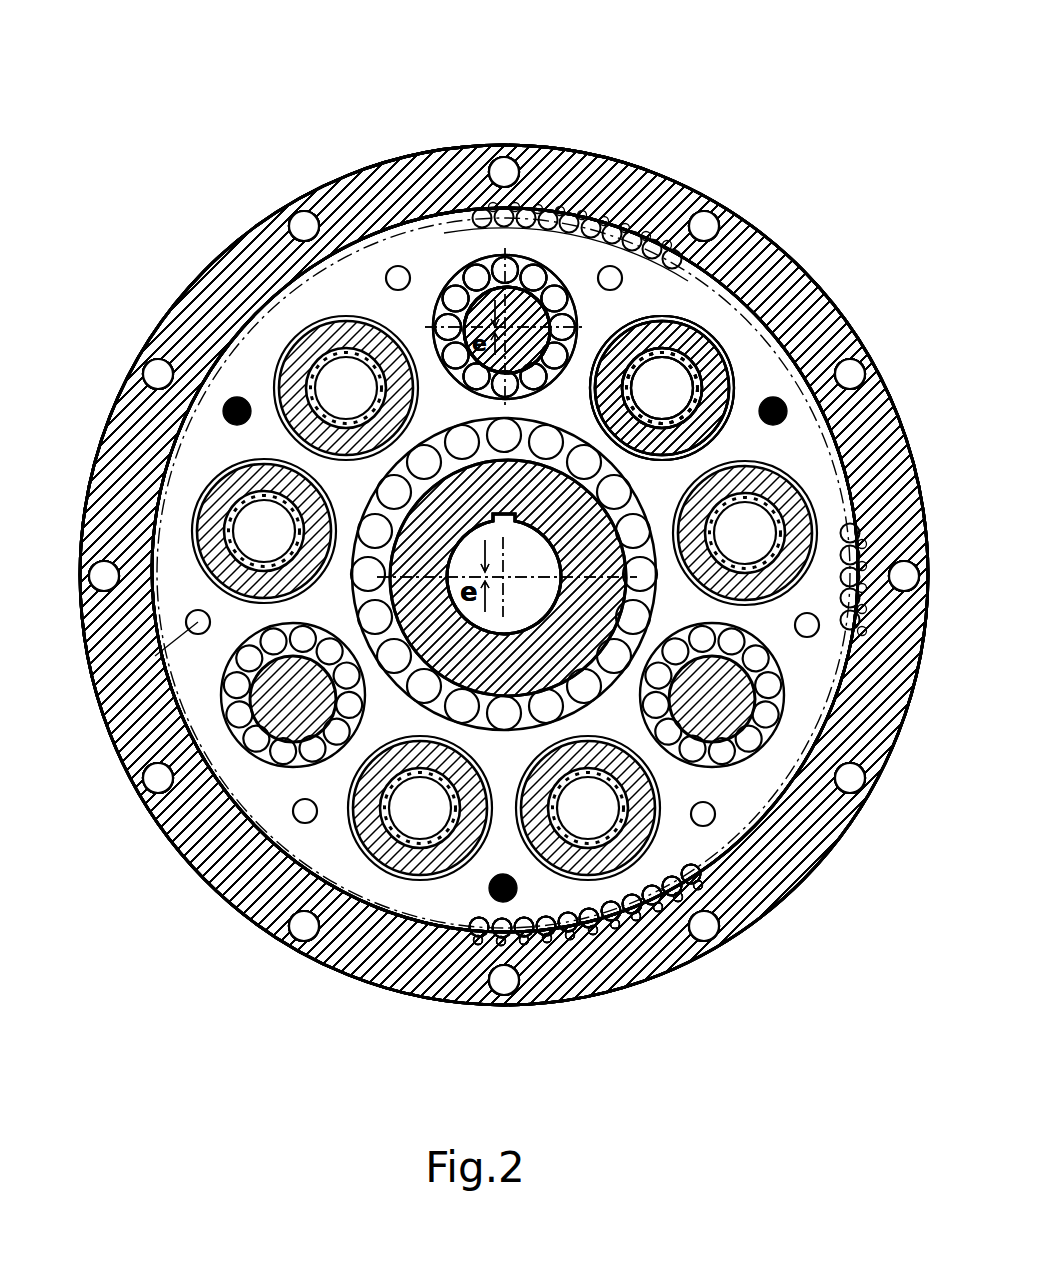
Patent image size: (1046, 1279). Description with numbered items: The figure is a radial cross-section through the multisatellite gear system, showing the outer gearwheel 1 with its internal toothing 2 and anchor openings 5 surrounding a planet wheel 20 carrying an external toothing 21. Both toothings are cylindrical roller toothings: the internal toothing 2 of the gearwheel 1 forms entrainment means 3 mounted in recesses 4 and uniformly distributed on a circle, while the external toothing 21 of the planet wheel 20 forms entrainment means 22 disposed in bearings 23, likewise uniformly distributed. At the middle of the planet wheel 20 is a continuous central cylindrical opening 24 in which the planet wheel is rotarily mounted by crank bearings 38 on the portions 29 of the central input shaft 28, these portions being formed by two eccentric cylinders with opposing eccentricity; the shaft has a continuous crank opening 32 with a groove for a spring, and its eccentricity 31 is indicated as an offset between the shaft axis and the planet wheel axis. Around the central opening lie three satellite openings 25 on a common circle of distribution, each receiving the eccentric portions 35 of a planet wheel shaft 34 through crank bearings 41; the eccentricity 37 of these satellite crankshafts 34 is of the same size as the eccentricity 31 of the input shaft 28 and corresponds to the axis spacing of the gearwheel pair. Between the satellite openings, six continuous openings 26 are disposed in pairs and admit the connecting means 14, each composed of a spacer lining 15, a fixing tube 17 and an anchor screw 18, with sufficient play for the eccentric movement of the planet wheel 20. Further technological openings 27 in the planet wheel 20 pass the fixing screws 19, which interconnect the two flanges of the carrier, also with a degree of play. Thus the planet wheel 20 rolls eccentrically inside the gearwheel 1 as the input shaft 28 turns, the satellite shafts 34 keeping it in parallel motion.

The gearwheel 1 is at (343, 207).
The internal toothing 2 is at (375, 980).
The entrainment means 3 is at (633, 938).
The recesses 4 is at (682, 905).
The anchor openings 5 is at (152, 815).
The connecting means 14 is at (771, 273).
The spacer lining 15 is at (718, 440).
The fixing tube 17 is at (675, 345).
The anchor screw 18 is at (452, 557).
The fixing screws 19 is at (345, 437).
The planet wheel 20 is at (813, 697).
The external toothing 21 is at (213, 862).
The entrainment means 22 is at (590, 942).
The bearings 23 is at (712, 880).
The central cylindrical opening 24 is at (853, 428).
The satellite openings 25 is at (592, 228).
The continuous openings 26 is at (677, 320).
The technological openings 27 is at (159, 777).
The central input shaft 28 is at (448, 345).
The eccentric portions 29 is at (448, 345).
The eccentricity 31 is at (230, 403).
The crank opening 32 is at (545, 600).
The planet wheel shaft 34 is at (510, 270).
The eccentric portions 35 is at (510, 270).
The eccentricity 37 is at (473, 500).
The crank bearings 38 is at (622, 497).
The crank bearings 41 is at (482, 263).